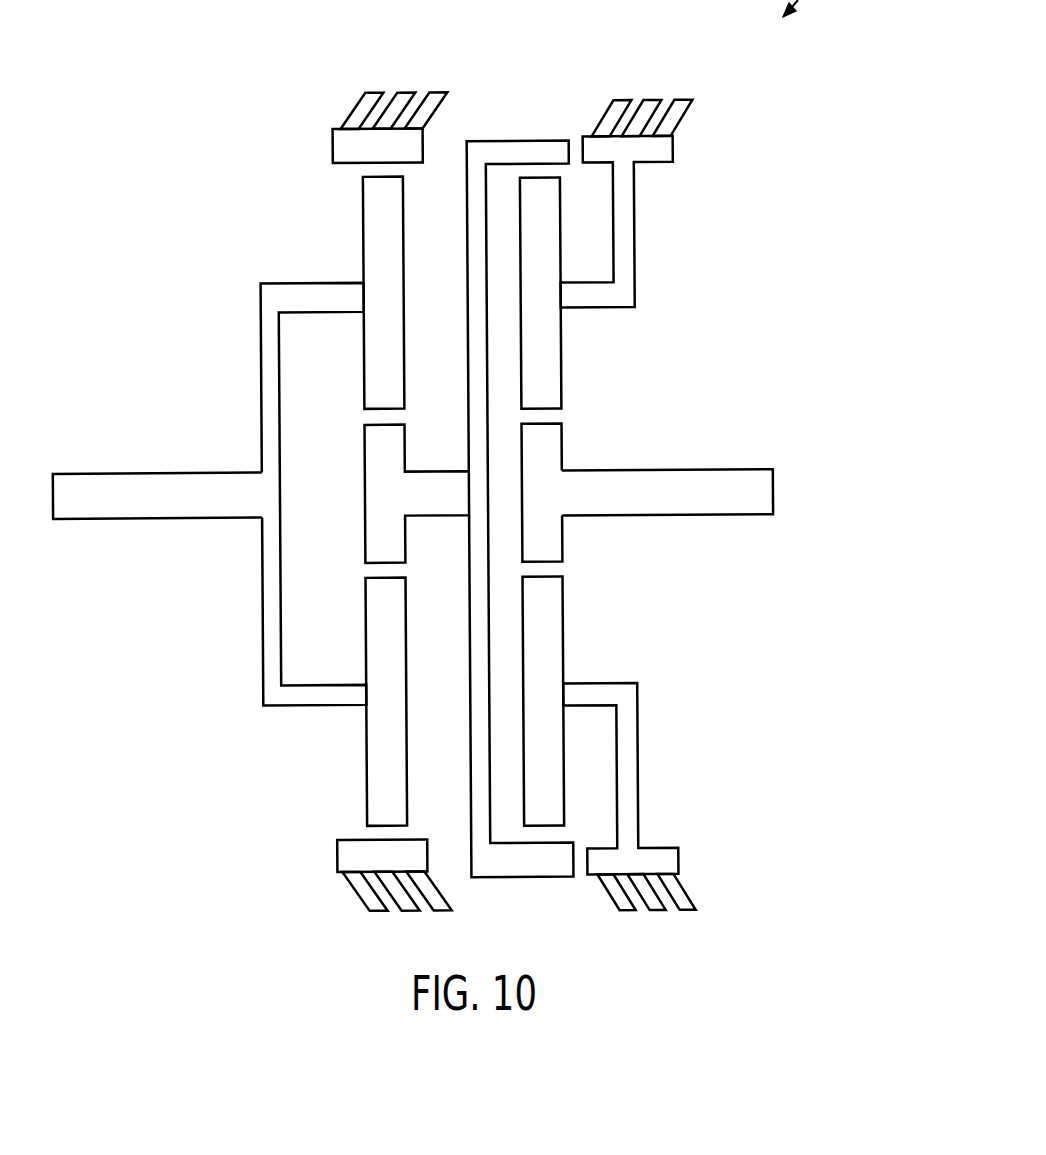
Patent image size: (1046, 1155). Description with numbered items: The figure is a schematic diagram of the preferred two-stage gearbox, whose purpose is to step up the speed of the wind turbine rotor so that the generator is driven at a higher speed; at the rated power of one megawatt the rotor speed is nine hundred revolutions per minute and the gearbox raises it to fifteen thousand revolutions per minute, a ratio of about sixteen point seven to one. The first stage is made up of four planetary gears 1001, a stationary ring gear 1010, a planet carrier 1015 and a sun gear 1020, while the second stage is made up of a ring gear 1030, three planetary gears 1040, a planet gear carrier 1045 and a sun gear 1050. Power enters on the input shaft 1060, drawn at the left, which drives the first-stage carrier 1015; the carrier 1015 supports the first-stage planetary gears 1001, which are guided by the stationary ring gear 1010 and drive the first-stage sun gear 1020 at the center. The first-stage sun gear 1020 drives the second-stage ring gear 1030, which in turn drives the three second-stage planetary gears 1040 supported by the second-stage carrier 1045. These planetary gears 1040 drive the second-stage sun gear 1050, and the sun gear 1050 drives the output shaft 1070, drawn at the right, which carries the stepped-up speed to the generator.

The stationary ring gear 1010 is at (326, 147).
The planetary gears 1001 is at (379, 219).
The ring gear 1030 is at (551, 150).
The planet gear carrier 1045 is at (647, 256).
The planet carrier 1015 is at (254, 343).
The sun gear 1020 is at (385, 530).
The input shaft 1060 is at (125, 492).
The planetary gears 1040 is at (546, 364).
The output shaft 1070 is at (763, 494).
The sun gear 1050 is at (547, 540).